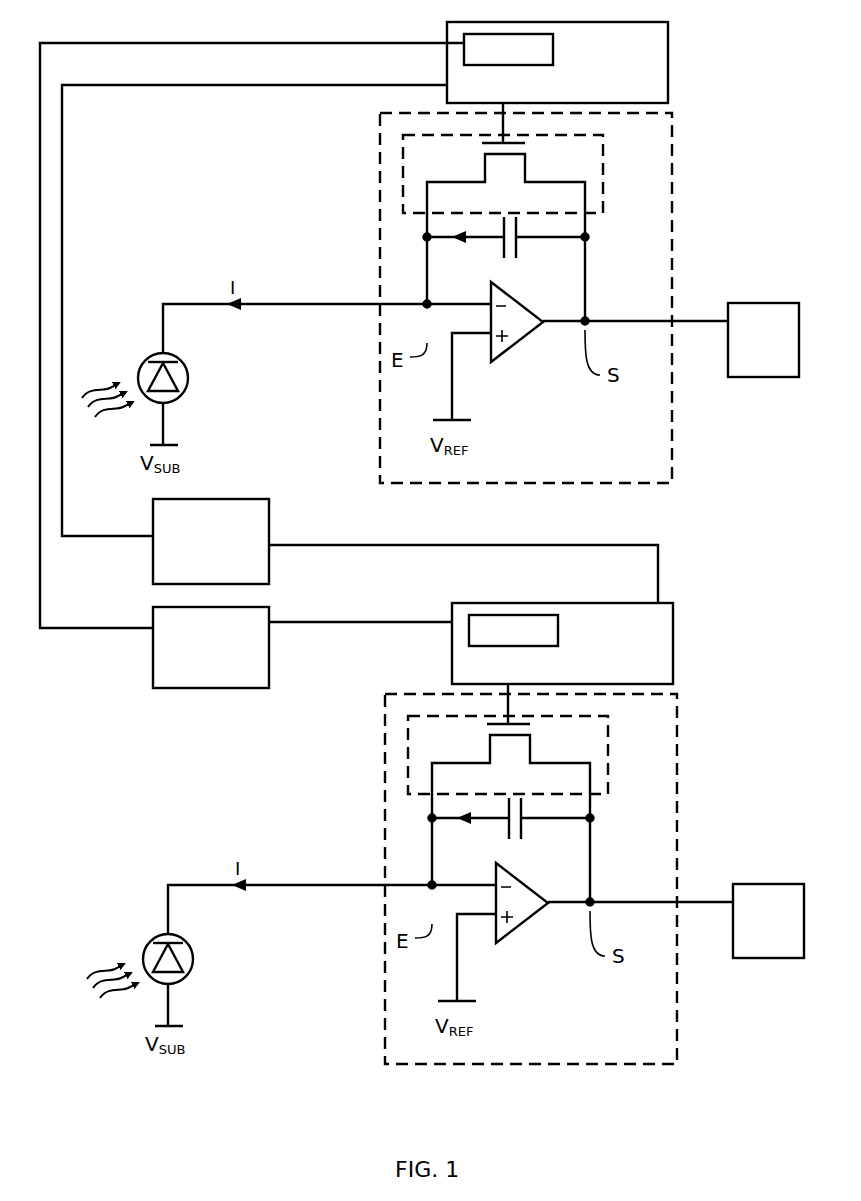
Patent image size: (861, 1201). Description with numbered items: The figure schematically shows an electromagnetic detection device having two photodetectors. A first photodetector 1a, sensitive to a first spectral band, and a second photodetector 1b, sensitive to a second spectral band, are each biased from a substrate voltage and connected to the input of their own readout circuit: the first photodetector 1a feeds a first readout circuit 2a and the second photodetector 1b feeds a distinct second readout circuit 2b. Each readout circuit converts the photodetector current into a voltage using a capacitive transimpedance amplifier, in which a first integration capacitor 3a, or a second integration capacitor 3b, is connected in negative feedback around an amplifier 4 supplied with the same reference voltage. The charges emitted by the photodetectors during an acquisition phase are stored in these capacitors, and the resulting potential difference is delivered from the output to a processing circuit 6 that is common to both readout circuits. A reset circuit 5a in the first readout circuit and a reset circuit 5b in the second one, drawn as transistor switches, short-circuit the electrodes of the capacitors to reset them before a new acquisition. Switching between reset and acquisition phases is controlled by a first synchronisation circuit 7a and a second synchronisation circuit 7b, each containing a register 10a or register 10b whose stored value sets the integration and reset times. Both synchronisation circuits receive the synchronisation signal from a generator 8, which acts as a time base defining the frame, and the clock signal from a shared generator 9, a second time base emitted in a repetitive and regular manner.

The first photodetector 1a is at (186, 385).
The second photodetector 1b is at (206, 969).
The first readout circuit 2a is at (672, 250).
The second readout circuit 2b is at (569, 879).
The first integration capacitor 3a is at (517, 242).
The second integration capacitor 3b is at (545, 828).
The amplifier 4 is at (521, 340).
The reset circuit of first readout circuit 5a is at (603, 190).
The reset circuit of second readout circuit 5b is at (565, 767).
The processing circuit 6 is at (760, 377).
The first synchronisation circuit 7a is at (668, 88).
The second synchronisation circuit 7b is at (620, 643).
The generator of synchronisation signal SYNC 8 is at (269, 522).
The generator of clock signal CLK 9 is at (269, 660).
The register of first synchronisation circuit 10a is at (553, 50).
The register of second synchronisation circuit 10b is at (564, 642).